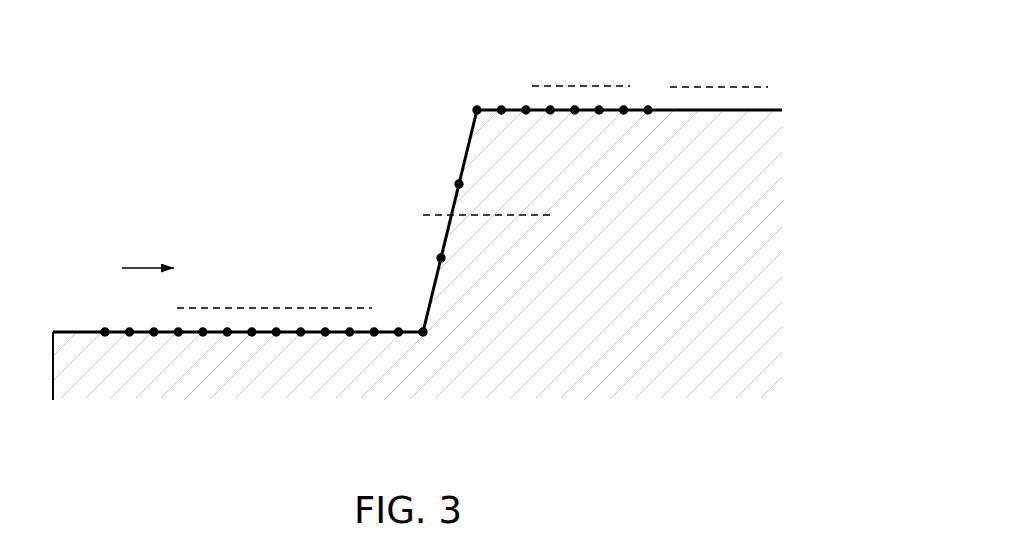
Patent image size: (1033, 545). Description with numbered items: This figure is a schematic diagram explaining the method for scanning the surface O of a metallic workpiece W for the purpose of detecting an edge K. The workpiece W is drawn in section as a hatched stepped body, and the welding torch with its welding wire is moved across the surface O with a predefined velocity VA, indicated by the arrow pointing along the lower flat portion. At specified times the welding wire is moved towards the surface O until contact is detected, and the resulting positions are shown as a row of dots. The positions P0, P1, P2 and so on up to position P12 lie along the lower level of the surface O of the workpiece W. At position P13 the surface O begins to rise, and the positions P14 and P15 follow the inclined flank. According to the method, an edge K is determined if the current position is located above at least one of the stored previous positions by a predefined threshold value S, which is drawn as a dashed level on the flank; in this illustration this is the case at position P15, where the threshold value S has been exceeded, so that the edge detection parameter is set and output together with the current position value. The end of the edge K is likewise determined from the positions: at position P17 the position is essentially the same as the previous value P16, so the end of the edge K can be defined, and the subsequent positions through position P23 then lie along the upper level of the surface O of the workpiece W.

The workpiece W is at (745, 249).
The edge K is at (442, 88).
The surface O is at (65, 313).
The predefined velocity VA is at (148, 243).
The threshold value S is at (474, 213).
The position P0 is at (103, 313).
The position P1 is at (131, 313).
The position P2 is at (159, 313).
The position P12 is at (396, 314).
The position P13 is at (423, 336).
The position P14 is at (421, 251).
The position P15 is at (439, 175).
The position P16 is at (473, 92).
The position P17 is at (508, 92).
The position P23 is at (649, 91).